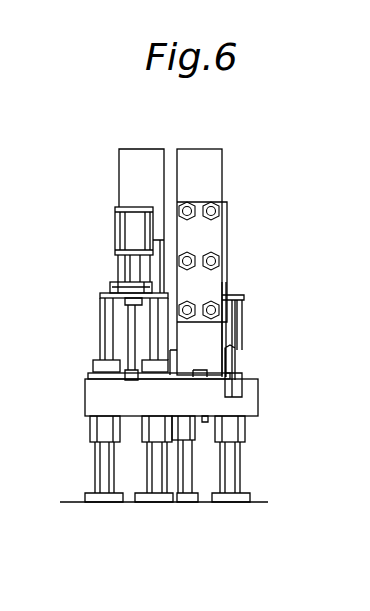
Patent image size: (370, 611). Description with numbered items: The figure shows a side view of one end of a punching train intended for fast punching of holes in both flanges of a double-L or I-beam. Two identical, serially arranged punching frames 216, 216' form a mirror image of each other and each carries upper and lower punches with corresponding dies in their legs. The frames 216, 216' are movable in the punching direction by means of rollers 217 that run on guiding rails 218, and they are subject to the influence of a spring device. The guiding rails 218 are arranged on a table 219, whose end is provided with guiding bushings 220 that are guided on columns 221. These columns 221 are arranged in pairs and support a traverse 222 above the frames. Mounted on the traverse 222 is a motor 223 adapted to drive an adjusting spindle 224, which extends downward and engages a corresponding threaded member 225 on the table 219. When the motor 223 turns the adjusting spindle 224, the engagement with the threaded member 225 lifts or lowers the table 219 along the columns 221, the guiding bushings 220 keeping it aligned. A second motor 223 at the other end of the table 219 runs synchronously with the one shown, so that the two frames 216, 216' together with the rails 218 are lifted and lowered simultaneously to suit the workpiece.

The punching frame 216 is at (118, 221).
The punching frame 216' is at (222, 263).
The rollers 217 is at (228, 352).
The guiding rails 218 is at (225, 385).
The table 219 is at (218, 403).
The guiding bushings 220 is at (102, 430).
The columns 221 is at (155, 475).
The traverse 222 is at (102, 293).
The motor 223 is at (127, 229).
The adjusting spindle 224 is at (133, 327).
The threaded member 225 is at (132, 375).